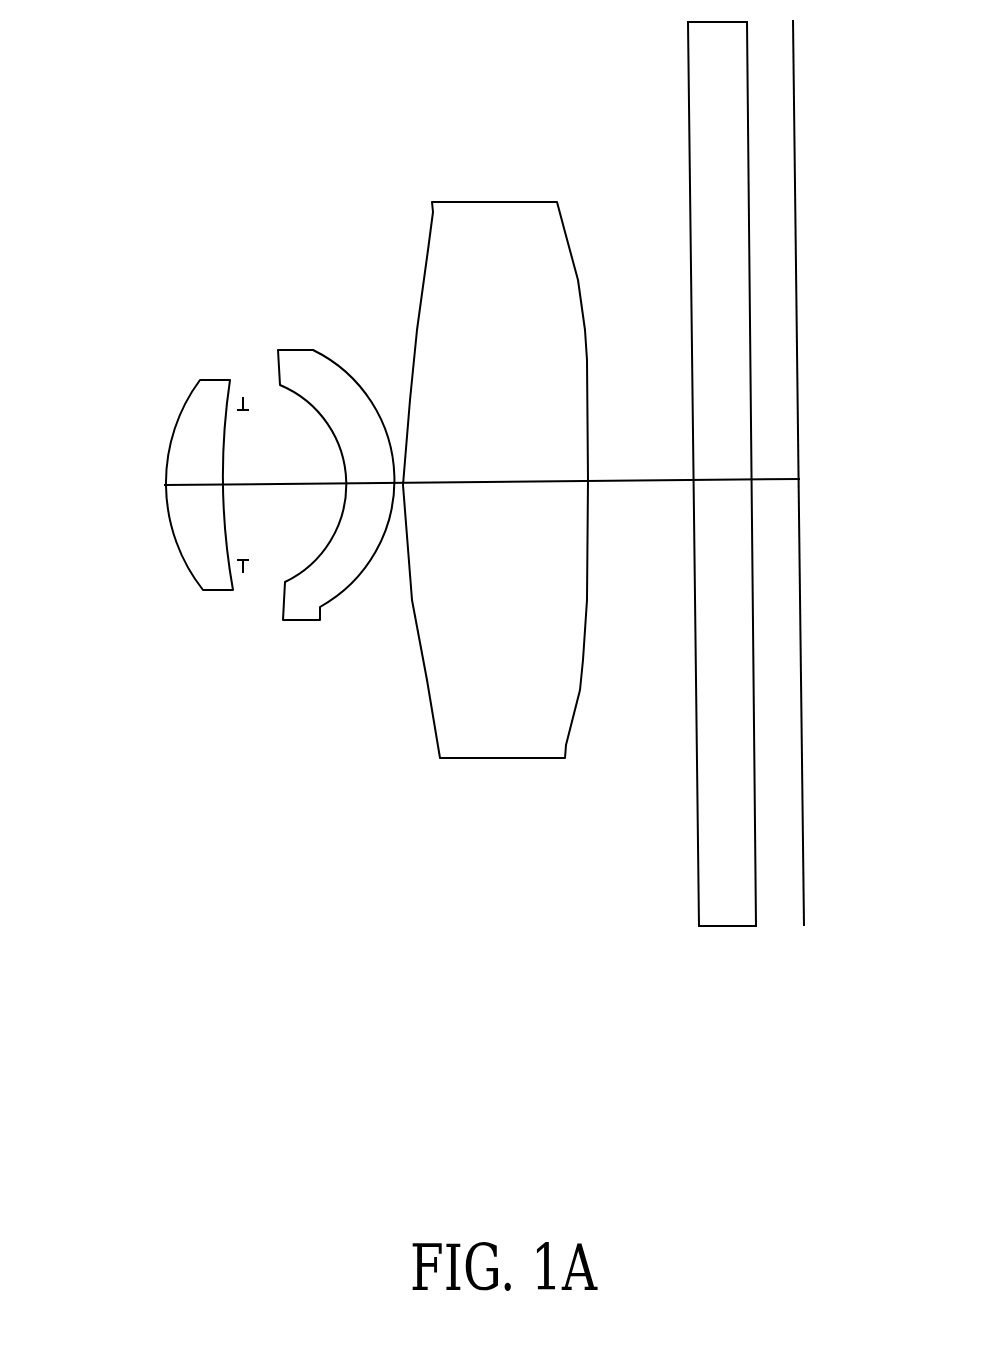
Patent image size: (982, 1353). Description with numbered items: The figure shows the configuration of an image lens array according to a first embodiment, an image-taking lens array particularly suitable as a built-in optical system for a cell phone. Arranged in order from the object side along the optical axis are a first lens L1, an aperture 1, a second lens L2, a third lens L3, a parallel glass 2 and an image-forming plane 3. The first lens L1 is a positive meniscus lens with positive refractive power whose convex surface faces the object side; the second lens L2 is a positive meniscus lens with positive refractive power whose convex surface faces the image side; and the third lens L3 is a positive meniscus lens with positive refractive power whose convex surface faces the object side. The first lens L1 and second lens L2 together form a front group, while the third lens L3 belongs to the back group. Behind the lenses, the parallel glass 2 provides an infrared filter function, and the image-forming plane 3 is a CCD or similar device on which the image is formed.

The first lens L1 is at (166, 408).
The second lens L2 is at (301, 340).
The third lens L3 is at (483, 193).
The aperture 1 is at (243, 383).
The parallel glass 2 is at (685, 83).
The image-forming plane 3 is at (791, 107).